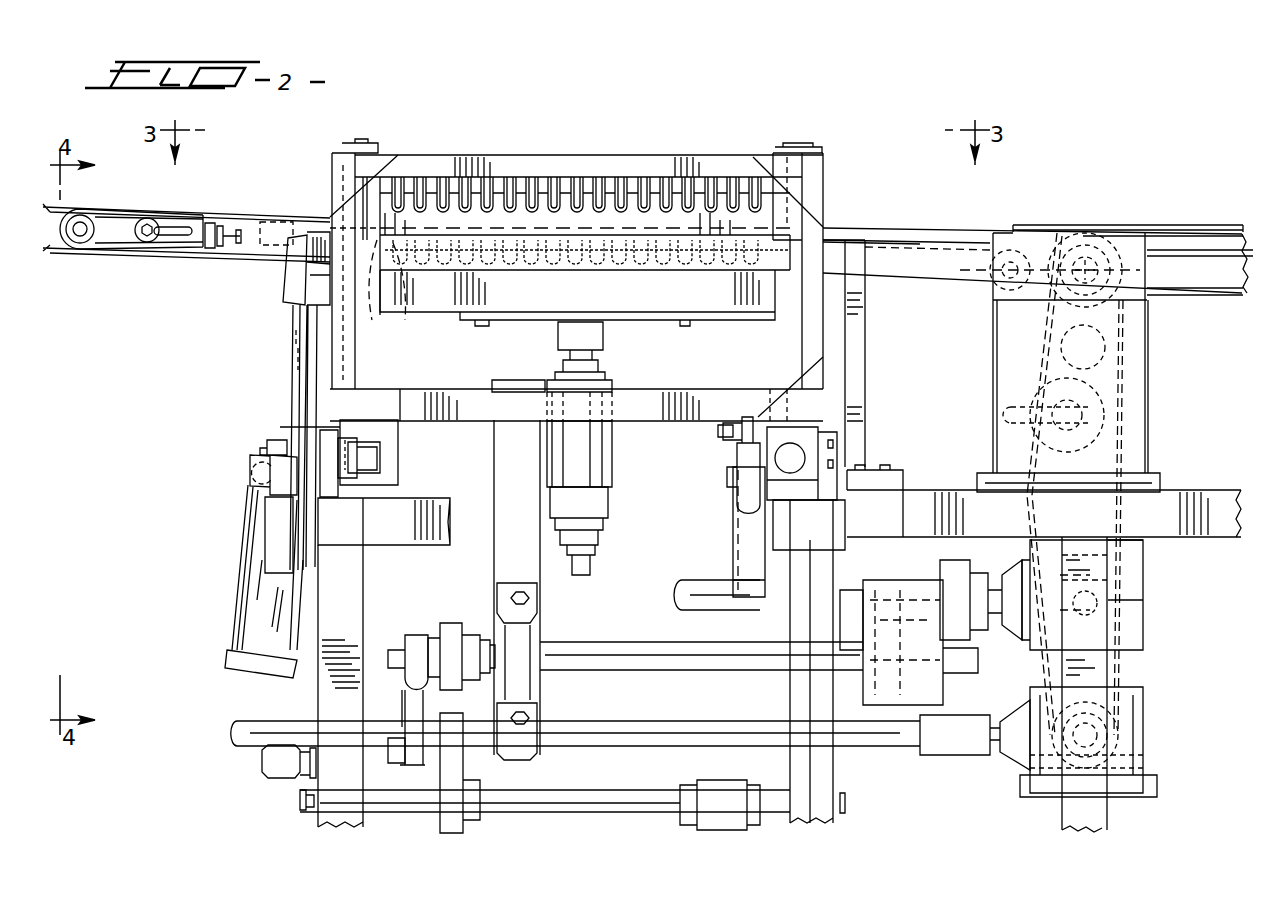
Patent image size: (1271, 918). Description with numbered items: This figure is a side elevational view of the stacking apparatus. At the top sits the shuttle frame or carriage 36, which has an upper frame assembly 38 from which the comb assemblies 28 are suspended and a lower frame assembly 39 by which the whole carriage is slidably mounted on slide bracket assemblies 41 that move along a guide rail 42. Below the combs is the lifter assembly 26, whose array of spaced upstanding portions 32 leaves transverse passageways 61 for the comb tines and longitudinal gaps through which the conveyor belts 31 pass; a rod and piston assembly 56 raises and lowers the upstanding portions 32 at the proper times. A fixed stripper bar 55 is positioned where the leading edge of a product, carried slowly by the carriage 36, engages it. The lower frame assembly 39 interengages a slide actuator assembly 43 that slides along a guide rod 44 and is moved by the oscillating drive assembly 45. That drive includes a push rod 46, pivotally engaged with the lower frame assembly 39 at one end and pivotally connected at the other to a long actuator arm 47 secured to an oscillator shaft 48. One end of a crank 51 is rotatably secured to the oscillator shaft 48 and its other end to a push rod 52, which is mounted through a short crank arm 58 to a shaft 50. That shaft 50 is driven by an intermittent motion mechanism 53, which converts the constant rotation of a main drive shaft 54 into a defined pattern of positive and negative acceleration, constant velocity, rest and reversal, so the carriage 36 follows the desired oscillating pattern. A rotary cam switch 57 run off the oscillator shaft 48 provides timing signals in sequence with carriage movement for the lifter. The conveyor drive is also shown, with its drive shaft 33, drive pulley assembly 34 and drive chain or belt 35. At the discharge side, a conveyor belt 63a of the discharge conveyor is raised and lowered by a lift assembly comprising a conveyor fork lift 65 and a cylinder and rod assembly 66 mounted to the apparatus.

The lifter assembly 26 is at (492, 346).
The comb assemblies 28 is at (707, 133).
The belts 31 is at (1105, 232).
The upstanding portions 32 is at (370, 291).
The drive shaft 33 is at (237, 725).
The drive pulley assembly 34 is at (1118, 738).
The drive chain or belt 35 is at (1120, 667).
The shuttle frame or carriage 36 is at (290, 158).
The upper frame assembly 38 is at (530, 153).
The lower frame assembly 39 is at (630, 390).
The slide bracket assemblies 41 is at (340, 428).
The guide rail 42 is at (365, 452).
The slide actuator assembly 43 is at (820, 438).
The guide rod 44 is at (790, 458).
The oscillating drive assembly 45 is at (700, 513).
The push rod 46 is at (738, 456).
The long actuator arm 47 is at (740, 570).
The oscillator shaft 48 is at (620, 800).
The shaft 50 is at (597, 663).
The crank 51 is at (453, 770).
The push rod 52 is at (385, 710).
The intermittent motion mechanism 53 is at (775, 680).
The main drive shaft 54 is at (680, 598).
The fixed stripper bar 55 is at (793, 223).
The rod and piston assembly 56 is at (602, 472).
The rotary cam switch 57 is at (283, 768).
The short crank arm 58 is at (447, 622).
The transverse passageways 61 is at (402, 294).
The conveyor belt 63a is at (1250, 293).
The conveyor fork lift 65 is at (288, 290).
The cylinder and rod assembly 66 is at (245, 590).